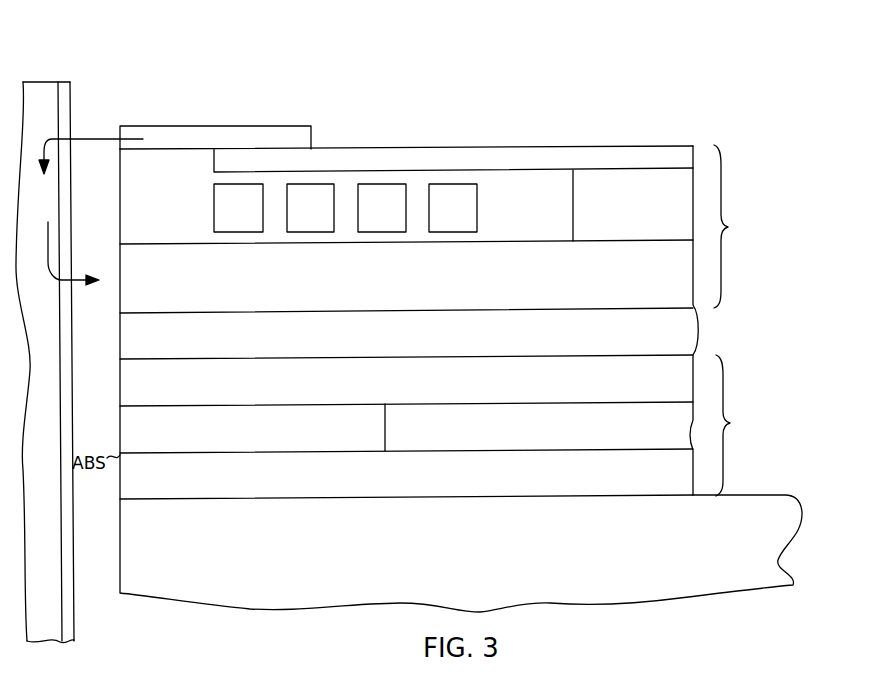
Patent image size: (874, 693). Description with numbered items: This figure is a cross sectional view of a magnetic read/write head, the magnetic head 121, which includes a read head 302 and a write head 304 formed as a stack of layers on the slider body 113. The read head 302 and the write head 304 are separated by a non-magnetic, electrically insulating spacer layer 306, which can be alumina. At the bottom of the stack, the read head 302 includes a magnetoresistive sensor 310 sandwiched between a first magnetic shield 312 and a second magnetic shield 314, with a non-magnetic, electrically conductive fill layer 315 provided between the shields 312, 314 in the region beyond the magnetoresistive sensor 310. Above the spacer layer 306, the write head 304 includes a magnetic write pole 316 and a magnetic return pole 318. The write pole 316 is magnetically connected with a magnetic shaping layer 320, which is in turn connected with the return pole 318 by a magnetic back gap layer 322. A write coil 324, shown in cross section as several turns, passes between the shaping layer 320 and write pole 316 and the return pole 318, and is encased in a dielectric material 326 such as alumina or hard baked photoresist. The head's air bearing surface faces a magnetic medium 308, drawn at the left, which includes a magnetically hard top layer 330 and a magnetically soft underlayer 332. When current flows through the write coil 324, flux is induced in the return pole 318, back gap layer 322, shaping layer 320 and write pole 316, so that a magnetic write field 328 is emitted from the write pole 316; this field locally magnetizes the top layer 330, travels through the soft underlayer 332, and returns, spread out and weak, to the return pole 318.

The magnetically soft underlayer 332 is at (47, 85).
The magnetically hard top layer 330 is at (65, 116).
The magnetic medium 308 is at (80, 93).
The magnetic write field 328 is at (58, 152).
The magnetic write pole 316 is at (275, 137).
The magnetic head 121 is at (545, 132).
The magnetic shaping layer 320 is at (508, 157).
The dielectric material 326 is at (535, 200).
The magnetic back gap layer 322 is at (596, 205).
The write coil 324 is at (255, 218).
The magnetic return pole 318 is at (418, 276).
The spacer layer 306 is at (426, 331).
The second magnetic shield 314 is at (426, 381).
The magnetoresistive sensor 310 is at (308, 429).
The fill layer 315 is at (564, 426).
The first magnetic shield 312 is at (448, 473).
The slider body 113 is at (468, 545).
The write head 304 is at (727, 152).
The read head 302 is at (727, 367).